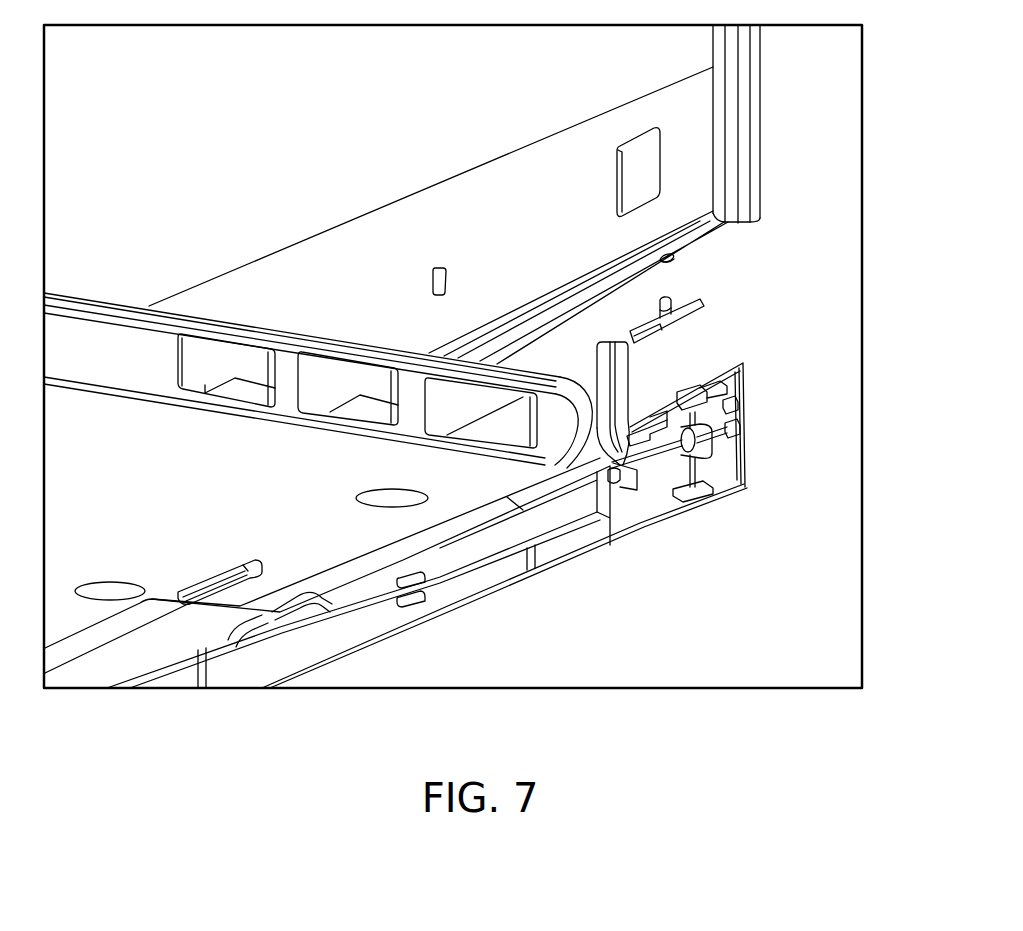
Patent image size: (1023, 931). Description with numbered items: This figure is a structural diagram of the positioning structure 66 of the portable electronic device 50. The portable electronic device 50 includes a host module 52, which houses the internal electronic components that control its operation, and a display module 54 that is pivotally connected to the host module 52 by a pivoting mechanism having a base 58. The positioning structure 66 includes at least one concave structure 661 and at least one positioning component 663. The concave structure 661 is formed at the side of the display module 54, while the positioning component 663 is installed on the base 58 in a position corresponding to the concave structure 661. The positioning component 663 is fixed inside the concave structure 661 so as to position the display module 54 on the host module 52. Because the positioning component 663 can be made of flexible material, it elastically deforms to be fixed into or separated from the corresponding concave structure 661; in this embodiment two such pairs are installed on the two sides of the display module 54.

The portable electronic device 50 is at (579, 195).
The host module 52 is at (296, 517).
The display module 54 is at (670, 58).
The base 58 is at (600, 467).
The positioning structure 66 is at (820, 321).
The concave structure 661 is at (673, 262).
The positioning component 663 is at (645, 329).